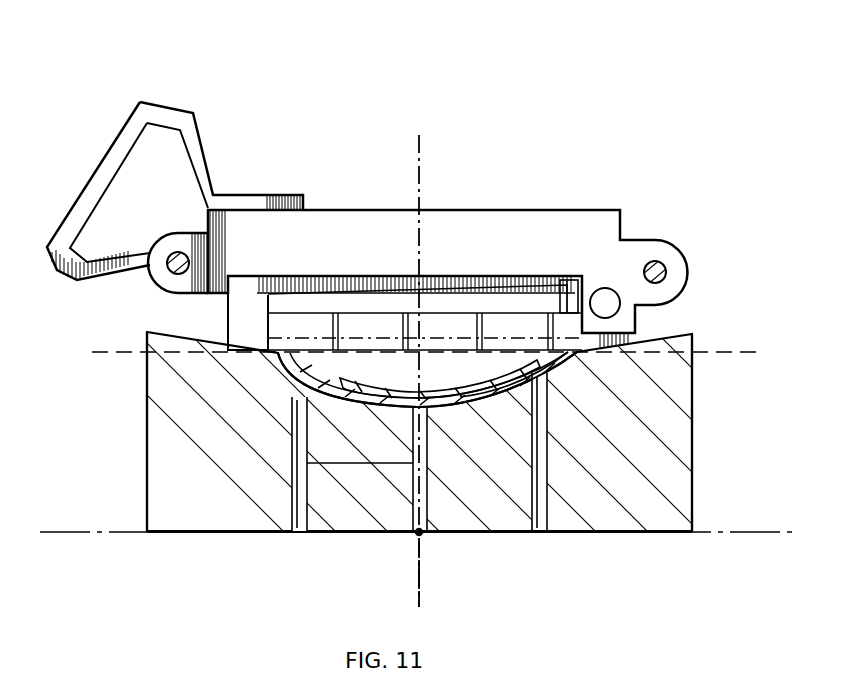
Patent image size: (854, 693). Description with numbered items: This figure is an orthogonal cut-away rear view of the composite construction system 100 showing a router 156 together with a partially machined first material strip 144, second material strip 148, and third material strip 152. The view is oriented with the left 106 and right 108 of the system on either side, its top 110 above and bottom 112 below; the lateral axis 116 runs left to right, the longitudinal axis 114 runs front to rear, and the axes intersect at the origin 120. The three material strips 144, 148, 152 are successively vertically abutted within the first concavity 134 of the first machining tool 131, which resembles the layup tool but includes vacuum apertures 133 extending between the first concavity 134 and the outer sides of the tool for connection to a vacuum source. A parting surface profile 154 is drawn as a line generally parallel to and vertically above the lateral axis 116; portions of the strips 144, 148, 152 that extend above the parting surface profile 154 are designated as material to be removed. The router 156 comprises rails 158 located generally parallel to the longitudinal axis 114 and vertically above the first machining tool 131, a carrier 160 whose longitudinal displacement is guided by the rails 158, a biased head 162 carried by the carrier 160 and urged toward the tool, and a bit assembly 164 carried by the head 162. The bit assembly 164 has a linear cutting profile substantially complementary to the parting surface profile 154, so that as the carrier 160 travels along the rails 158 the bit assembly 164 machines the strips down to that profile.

The composite construction system 100 is at (288, 62).
The left 106 is at (713, 418).
The right 108 is at (118, 420).
The top 110 is at (438, 168).
The bottom 112 is at (536, 566).
The longitudinal axis 114 is at (418, 587).
The lateral axis 116 is at (720, 533).
The origin 120 is at (413, 538).
The first machining tool 131 is at (693, 452).
The vacuum apertures 133 is at (290, 514).
The first concavity 134 is at (440, 388).
The first material strip 144 is at (363, 410).
The second material strip 148 is at (497, 365).
The third material strip 152 is at (372, 388).
The parting surface profile 154 is at (733, 352).
The router 156 is at (367, 198).
The rails 158 is at (167, 267).
The carrier 160 is at (535, 210).
The head 162 is at (230, 322).
The bit assembly 164 is at (565, 300).